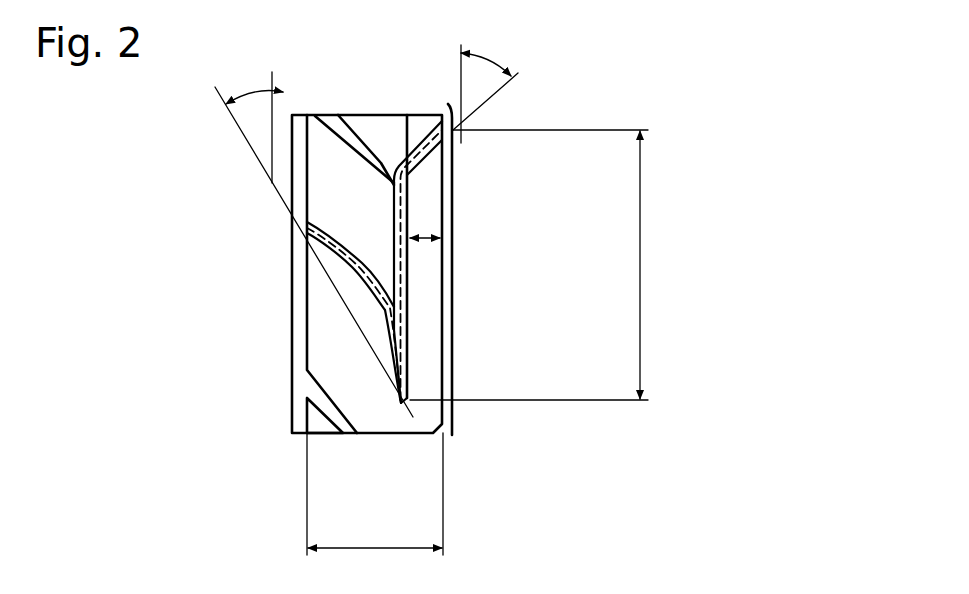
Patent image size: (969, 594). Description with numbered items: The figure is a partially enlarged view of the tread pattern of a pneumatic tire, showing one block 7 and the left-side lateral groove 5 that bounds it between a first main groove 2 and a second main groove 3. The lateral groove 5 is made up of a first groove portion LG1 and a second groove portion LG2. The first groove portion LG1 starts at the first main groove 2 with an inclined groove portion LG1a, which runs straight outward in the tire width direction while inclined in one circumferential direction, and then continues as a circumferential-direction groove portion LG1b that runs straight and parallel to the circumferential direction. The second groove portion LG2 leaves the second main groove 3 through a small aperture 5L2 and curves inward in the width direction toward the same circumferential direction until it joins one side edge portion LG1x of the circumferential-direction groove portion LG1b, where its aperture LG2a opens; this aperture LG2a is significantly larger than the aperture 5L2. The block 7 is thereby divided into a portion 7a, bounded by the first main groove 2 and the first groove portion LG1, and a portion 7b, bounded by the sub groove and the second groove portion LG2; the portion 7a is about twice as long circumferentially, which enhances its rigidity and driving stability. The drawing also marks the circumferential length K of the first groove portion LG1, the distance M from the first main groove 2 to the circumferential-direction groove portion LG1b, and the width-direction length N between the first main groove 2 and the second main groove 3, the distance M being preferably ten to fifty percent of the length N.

The first main groove 2 is at (448, 104).
The second main groove 3 is at (298, 383).
The lateral groove 5 is at (411, 262).
The block 7 is at (324, 343).
The portion of the block 7a is at (423, 285).
The portion of the block 7b is at (342, 172).
The aperture 5L2 is at (307, 232).
The first groove portion LG1 is at (409, 204).
The inclined groove portion LG1a is at (447, 164).
The circumferential-direction groove portion LG1b is at (408, 303).
The one side edge portion LG1x is at (406, 360).
The second groove portion LG2 is at (352, 276).
The aperture LG2a is at (390, 347).
The distance M is at (436, 236).
The length K is at (536, 265).
The length N is at (375, 494).